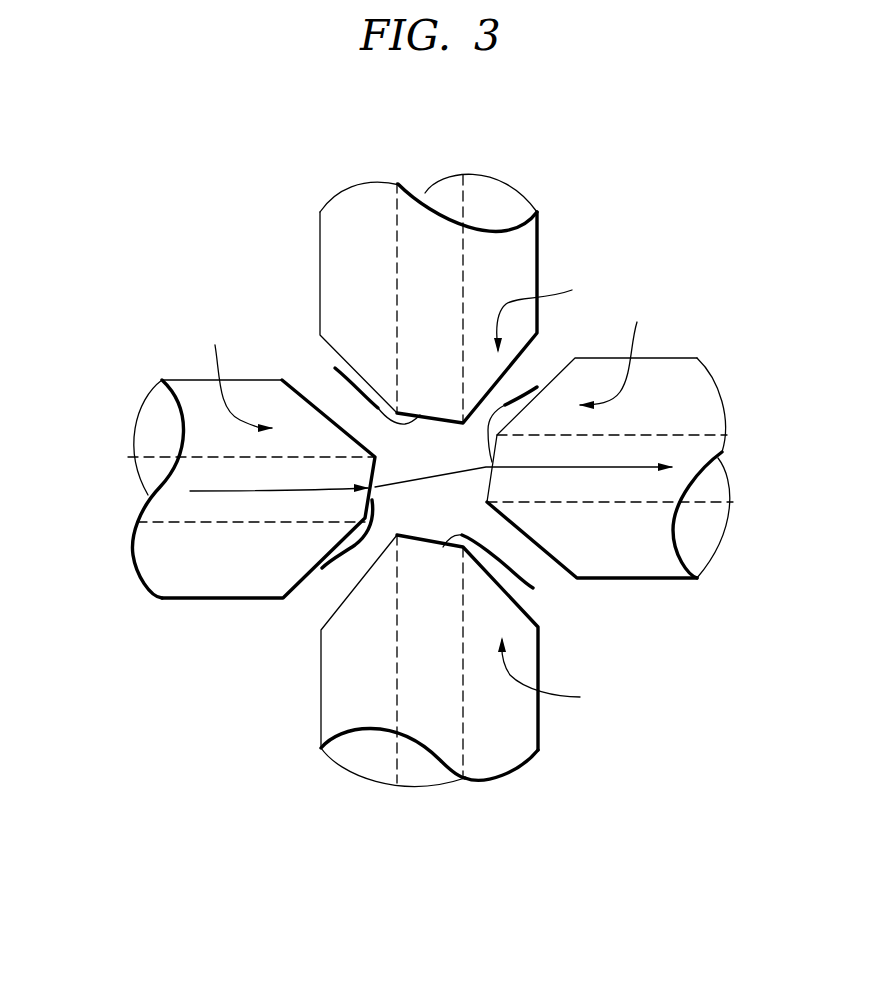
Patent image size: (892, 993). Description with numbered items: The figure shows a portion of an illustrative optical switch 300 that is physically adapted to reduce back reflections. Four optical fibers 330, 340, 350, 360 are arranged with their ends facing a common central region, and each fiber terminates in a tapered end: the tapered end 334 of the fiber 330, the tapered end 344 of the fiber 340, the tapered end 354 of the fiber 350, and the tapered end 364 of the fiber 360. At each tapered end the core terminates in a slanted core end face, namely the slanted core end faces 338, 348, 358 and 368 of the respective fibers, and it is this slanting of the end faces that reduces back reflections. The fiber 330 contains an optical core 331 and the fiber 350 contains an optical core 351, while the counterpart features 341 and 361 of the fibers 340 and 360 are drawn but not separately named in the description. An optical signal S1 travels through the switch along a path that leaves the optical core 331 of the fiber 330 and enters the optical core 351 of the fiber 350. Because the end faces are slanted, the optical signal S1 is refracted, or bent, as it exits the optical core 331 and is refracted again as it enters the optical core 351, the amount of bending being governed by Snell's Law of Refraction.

The optical switch 300 is at (643, 119).
The fiber 330 is at (208, 515).
The optical core 331 is at (153, 512).
The tapered end 334 is at (227, 376).
The slanted core end face 338 is at (322, 568).
The fiber 340 is at (468, 272).
The second roller end 341 is at (423, 215).
The tapered end 344 is at (551, 307).
The slanted core end face 348 is at (337, 370).
The fiber 350 is at (650, 441).
The optical core 351 is at (687, 443).
The tapered end 354 is at (627, 354).
The slanted core end face 358 is at (537, 387).
The fiber 360 is at (387, 689).
The fourth roller end 361 is at (452, 753).
The tapered end 364 is at (558, 678).
The slanted core end face 368 is at (533, 588).
The optical signal S1 is at (190, 491).